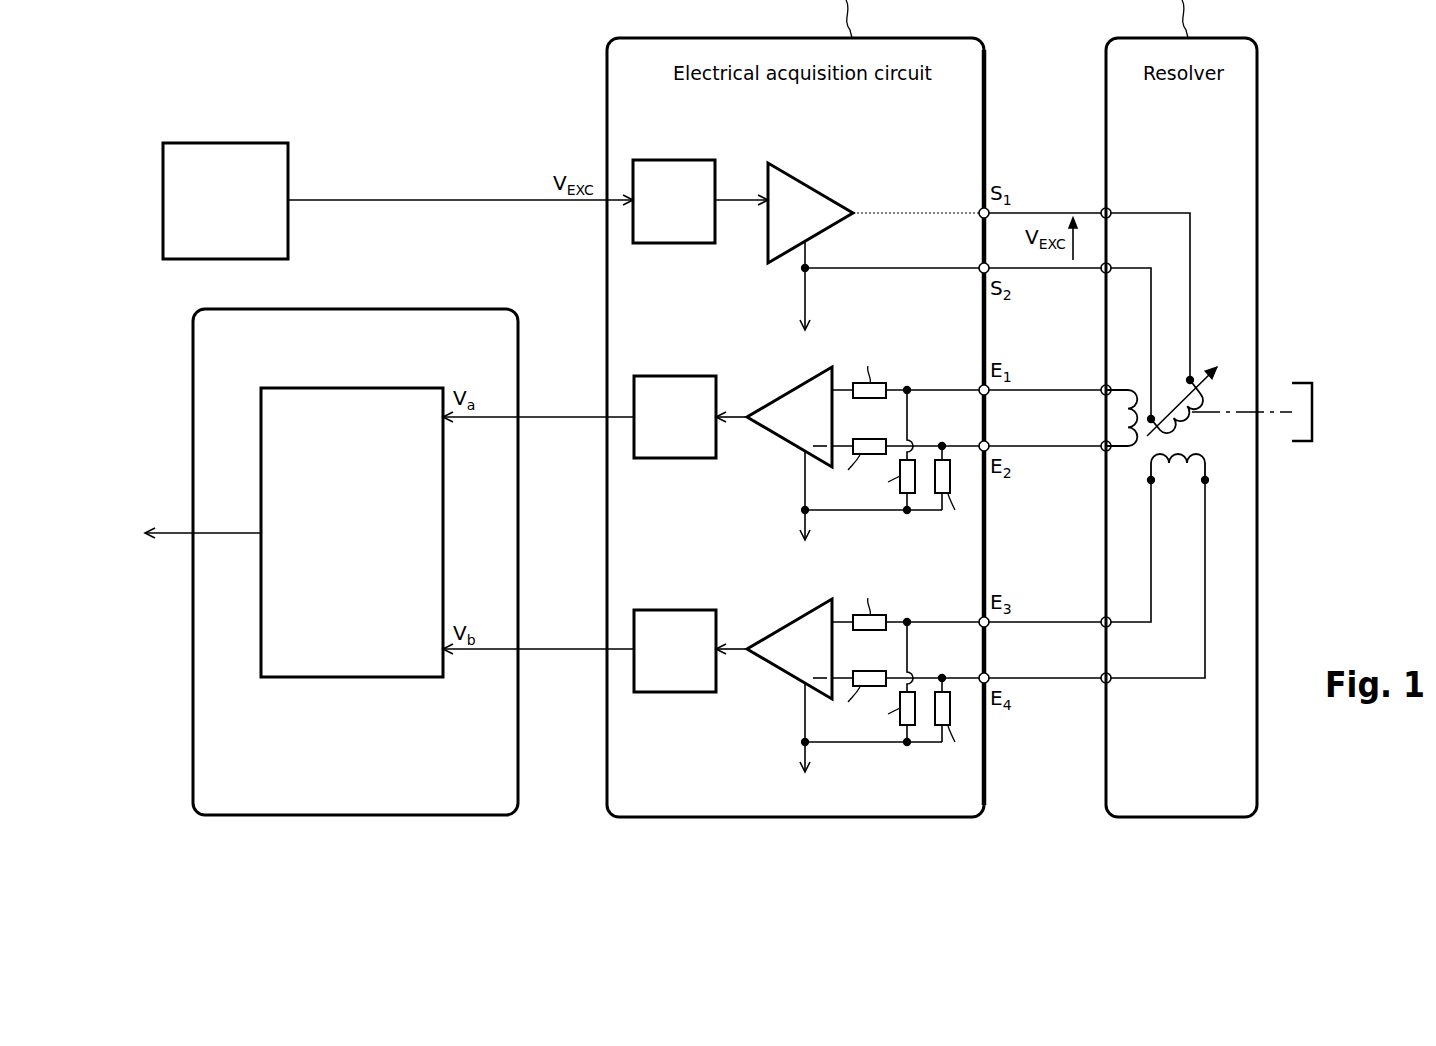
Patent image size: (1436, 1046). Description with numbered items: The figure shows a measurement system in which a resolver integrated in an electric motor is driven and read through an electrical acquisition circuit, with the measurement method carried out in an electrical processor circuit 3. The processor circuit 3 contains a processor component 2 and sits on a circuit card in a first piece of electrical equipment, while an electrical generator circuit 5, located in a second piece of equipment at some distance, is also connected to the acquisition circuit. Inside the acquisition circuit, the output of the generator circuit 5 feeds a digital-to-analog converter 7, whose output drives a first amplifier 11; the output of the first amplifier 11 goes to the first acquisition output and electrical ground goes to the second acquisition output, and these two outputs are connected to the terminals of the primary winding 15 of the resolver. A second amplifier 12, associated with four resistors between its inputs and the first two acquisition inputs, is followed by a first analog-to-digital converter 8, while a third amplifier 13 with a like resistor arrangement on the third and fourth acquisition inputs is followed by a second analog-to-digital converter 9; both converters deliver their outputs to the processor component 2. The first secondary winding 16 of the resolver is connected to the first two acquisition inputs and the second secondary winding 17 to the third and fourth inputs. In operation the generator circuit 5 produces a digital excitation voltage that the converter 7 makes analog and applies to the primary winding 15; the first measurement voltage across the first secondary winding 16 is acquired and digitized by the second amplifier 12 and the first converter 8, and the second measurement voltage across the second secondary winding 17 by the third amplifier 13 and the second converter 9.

The processor component 2 is at (362, 388).
The electrical processor circuit 3 is at (434, 309).
The electrical generator circuit 5 is at (238, 143).
The digital-to-analog converter 7 is at (686, 160).
The first analog-to-digital converter 8 is at (686, 376).
The second analog-to-digital converter 9 is at (686, 610).
The first amplifier 11 is at (815, 195).
The second amplifier 12 is at (790, 398).
The third amplifier 13 is at (790, 630).
The primary winding 15 is at (1207, 400).
The first secondary winding 16 is at (1138, 398).
The second secondary winding 17 is at (1178, 470).